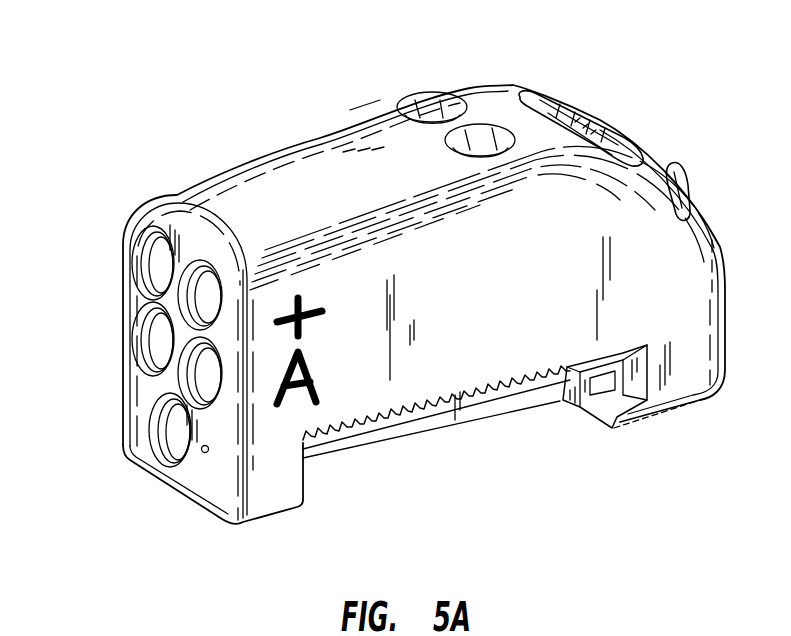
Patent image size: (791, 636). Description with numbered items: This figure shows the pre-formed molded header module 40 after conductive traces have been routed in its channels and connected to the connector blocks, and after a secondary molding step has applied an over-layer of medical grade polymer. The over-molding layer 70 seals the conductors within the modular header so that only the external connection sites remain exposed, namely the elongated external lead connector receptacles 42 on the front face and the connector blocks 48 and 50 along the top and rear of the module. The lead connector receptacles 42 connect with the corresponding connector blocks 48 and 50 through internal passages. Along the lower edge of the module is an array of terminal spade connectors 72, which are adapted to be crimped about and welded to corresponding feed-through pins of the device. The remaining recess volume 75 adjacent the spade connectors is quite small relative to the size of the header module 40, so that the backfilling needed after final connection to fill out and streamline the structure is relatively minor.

The pre-formed molded header module 40 is at (205, 153).
The elongated external lead connector receptacles 42 is at (163, 262).
The connector block 48 is at (440, 110).
The connector block 50 is at (578, 114).
The over-molding layer 70 is at (172, 207).
The terminal spade connectors 72 is at (355, 428).
The remaining recess volume 75 is at (497, 478).